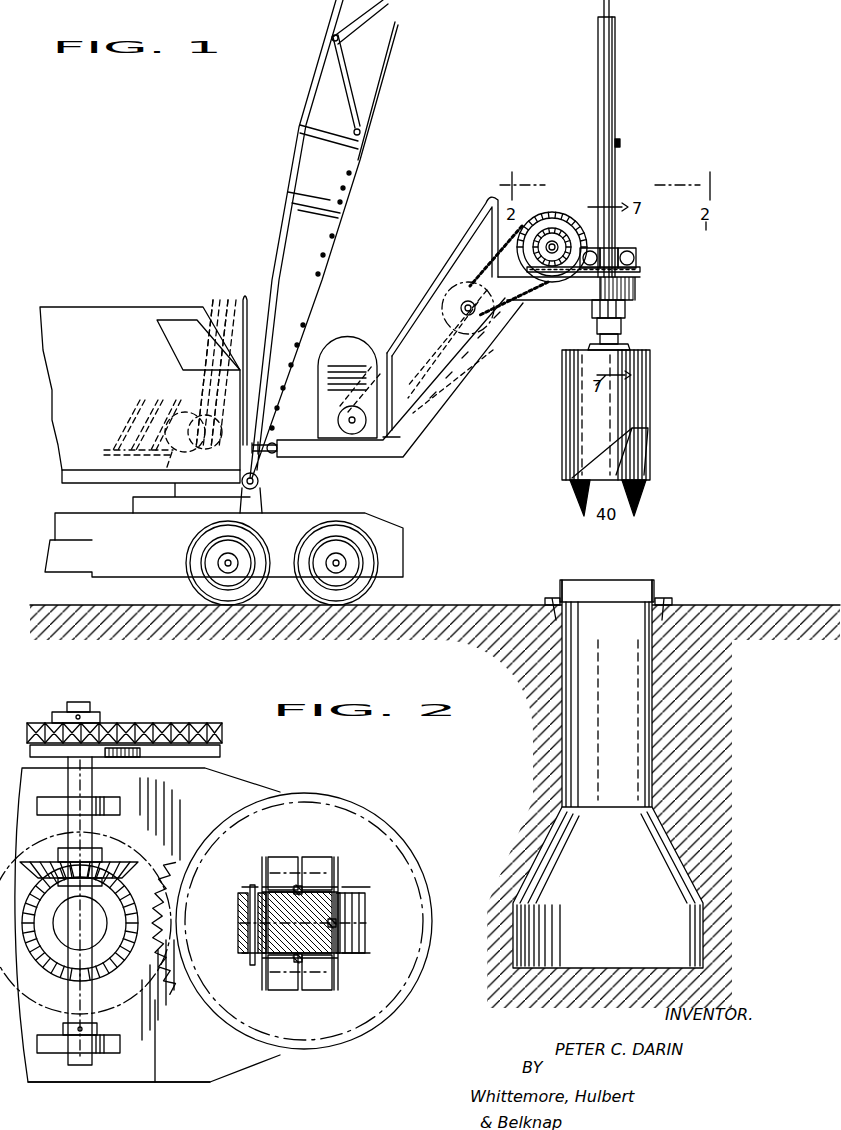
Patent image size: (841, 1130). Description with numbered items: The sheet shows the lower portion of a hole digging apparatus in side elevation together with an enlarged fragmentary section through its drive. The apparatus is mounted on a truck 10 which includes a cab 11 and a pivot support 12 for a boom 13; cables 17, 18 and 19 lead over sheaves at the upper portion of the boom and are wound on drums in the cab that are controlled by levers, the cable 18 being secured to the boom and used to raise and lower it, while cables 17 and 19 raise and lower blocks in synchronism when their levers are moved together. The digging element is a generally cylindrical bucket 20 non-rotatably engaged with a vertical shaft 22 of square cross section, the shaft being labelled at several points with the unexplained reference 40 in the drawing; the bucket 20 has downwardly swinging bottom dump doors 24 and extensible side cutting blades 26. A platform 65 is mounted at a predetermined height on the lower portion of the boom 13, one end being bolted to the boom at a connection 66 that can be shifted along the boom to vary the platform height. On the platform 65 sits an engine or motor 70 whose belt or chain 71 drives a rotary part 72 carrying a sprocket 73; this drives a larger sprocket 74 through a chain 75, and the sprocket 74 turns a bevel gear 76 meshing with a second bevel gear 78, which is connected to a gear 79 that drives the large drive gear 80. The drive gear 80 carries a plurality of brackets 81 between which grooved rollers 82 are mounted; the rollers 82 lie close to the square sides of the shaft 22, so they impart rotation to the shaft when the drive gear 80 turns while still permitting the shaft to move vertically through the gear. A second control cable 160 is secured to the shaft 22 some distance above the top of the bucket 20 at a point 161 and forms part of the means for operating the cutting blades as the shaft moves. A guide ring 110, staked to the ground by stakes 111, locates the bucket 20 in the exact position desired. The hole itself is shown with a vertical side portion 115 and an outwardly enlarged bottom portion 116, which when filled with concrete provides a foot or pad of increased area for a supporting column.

In FIG. 1, the truck 10 is at (396, 532).
In FIG. 1, the cab 11 is at (70, 307).
In FIG. 1, the pivot support 12 is at (258, 483).
In FIG. 1, the boom 13 is at (352, 186).
In FIG. 1, the cable 17 is at (222, 302).
In FIG. 1, the cable 18 is at (224, 308).
In FIG. 1, the cable 19 is at (250, 300).
In FIG. 1, the bucket 20 is at (652, 392).
In FIG. 1, the vertical shaft 22 is at (618, 112).
In FIG. 2, the vertical shaft 22 is at (330, 945).
In FIG. 1, the bottom dump doors 24 is at (640, 498).
In FIG. 1, the extensible side cutting blades 26 is at (580, 460).
In FIG. 1, the square kelly shaft 40 is at (602, 62).
In FIG. 2, the square kelly shaft 40 is at (298, 962).
In FIG. 1, the platform 65 is at (450, 385).
In FIG. 2, the platform 65 is at (119, 1097).
In FIG. 1, the platform connection 66 is at (278, 456).
In FIG. 1, the engine or motor 70 is at (348, 345).
In FIG. 1, the belt or chain 71 is at (410, 332).
In FIG. 1, the rotary part 72 is at (444, 285).
In FIG. 1, the sprocket 73 is at (458, 322).
In FIG. 1, the larger sprocket 74 is at (550, 214).
In FIG. 2, the larger sprocket 74 is at (165, 740).
In FIG. 1, the chain 75 is at (490, 274).
In FIG. 1, the bevel gear 76 is at (566, 238).
In FIG. 2, the bevel gear 76 is at (122, 866).
In FIG. 1, the second bevel gear 78 is at (555, 280).
In FIG. 2, the second bevel gear 78 is at (112, 965).
In FIG. 2, the gear 79 is at (132, 810).
In FIG. 1, the drive gear 80 is at (642, 270).
In FIG. 2, the drive gear 80 is at (345, 806).
In FIG. 1, the brackets 81 is at (638, 250).
In FIG. 2, the brackets 81 is at (340, 870).
In FIG. 2, the grooved rollers 82 is at (314, 985).
In FIG. 1, the guide ring 110 is at (652, 584).
In FIG. 1, the stakes 111 is at (672, 600).
In FIG. 1, the vertical side portion 115 is at (648, 658).
In FIG. 1, the outwardly enlarged bottom portion 116 is at (655, 950).
In FIG. 1, the second control cable 160 is at (617, 178).
In FIG. 2, the second control cable 160 is at (338, 920).
In FIG. 1, the cable attachment point 161 is at (621, 143).